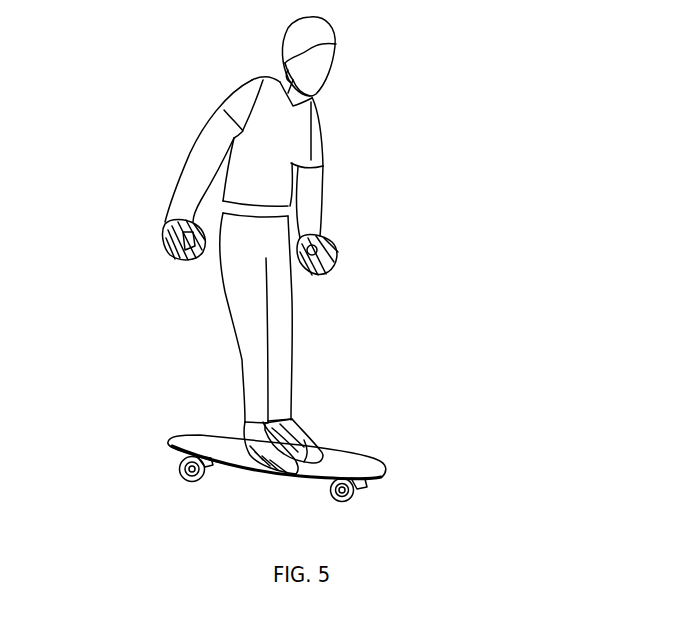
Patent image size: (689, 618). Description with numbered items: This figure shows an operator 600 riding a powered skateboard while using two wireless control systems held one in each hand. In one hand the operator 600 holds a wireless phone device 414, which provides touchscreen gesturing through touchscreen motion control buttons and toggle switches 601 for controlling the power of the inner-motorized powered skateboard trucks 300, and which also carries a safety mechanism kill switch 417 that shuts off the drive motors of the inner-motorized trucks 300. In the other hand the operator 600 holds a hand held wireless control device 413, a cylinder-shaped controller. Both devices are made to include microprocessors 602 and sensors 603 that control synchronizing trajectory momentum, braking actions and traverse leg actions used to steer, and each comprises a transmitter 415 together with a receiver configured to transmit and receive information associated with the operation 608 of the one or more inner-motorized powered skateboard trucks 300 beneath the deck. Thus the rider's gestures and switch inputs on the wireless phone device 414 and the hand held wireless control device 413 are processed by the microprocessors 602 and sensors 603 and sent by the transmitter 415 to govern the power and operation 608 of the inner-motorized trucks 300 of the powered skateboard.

The operator 600 is at (336, 245).
The hand held wireless control device 413 is at (311, 267).
The wireless phone device 414 is at (136, 275).
The transmitter 415 is at (136, 275).
The safety mechanism kill switch 417 is at (136, 275).
The touchscreen motion control buttons and toggle switches 601 is at (136, 275).
The operation 608 is at (193, 251).
The inner-motorized trucks 300 is at (263, 463).
The microprocessors 602 is at (228, 490).
The sensors 603 is at (358, 501).